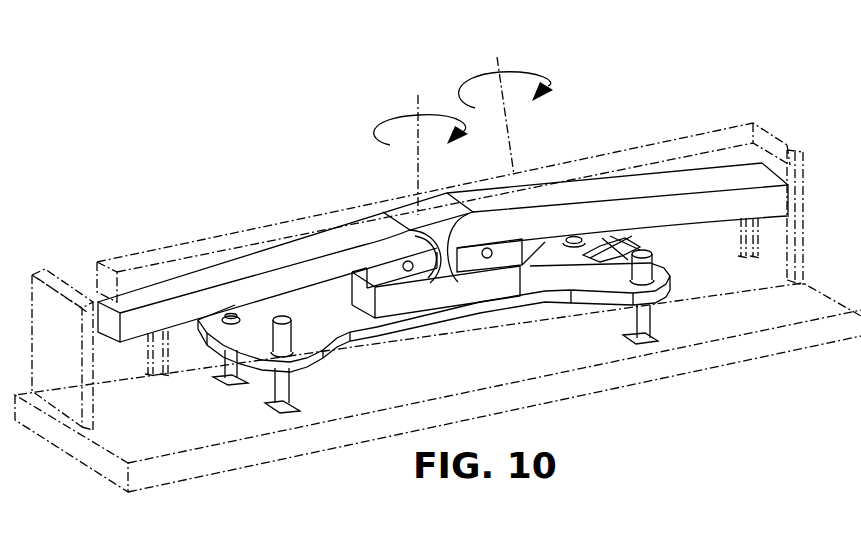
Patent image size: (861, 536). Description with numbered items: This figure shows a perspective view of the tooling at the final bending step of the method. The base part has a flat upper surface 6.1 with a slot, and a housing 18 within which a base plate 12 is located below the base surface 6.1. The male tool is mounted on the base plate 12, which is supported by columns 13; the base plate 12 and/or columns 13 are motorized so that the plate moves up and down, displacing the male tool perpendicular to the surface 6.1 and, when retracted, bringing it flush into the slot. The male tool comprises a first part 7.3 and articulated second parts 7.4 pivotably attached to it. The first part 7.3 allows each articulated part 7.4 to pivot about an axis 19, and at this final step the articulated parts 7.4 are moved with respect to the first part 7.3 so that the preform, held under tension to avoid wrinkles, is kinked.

The surface of the base part 6.1 is at (78, 280).
The housing 18 is at (138, 252).
The articulated part 7.4 is at (262, 258).
The first part 7.3 is at (405, 212).
The base plate 12 is at (248, 366).
The columns 13 is at (294, 388).
The axis 19 is at (418, 97).